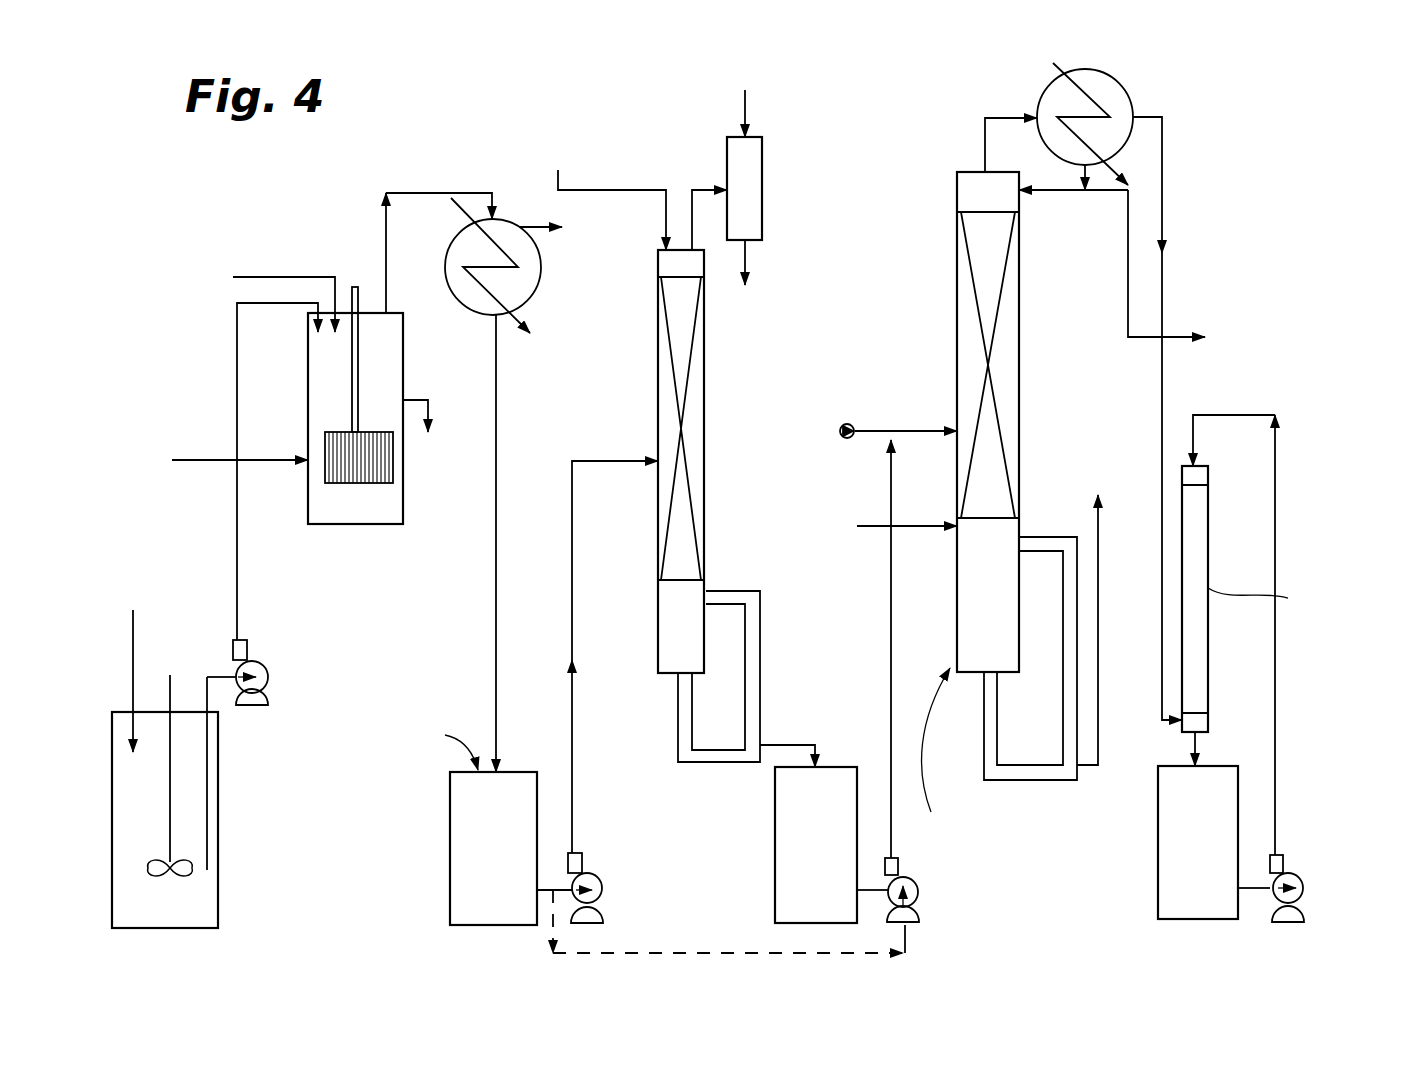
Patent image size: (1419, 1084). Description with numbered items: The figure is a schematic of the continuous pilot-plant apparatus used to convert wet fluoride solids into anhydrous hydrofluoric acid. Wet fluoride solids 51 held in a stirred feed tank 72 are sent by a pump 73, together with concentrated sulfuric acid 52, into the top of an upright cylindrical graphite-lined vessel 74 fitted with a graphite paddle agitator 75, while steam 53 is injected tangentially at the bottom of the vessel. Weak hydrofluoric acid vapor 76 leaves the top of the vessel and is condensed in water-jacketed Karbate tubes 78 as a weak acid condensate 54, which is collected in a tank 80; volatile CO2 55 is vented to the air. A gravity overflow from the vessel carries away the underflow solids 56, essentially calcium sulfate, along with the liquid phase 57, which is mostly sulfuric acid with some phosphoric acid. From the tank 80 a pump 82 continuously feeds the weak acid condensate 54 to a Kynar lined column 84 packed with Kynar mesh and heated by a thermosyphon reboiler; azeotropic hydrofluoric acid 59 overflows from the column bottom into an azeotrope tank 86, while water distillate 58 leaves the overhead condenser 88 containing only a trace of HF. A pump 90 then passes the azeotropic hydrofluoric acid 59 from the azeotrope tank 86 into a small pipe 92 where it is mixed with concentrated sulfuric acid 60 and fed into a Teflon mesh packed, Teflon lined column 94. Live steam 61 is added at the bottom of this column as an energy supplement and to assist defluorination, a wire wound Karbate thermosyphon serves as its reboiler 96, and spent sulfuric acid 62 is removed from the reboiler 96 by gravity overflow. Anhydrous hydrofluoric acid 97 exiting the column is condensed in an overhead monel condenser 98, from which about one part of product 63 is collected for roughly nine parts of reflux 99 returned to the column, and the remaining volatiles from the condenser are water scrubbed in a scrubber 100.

The wet fluoride solids 51 is at (237, 385).
The concentrated sulfuric acid 52 is at (316, 258).
The steam 53 is at (224, 447).
The weak acid condensate 54 is at (497, 405).
The volatile CO2 55 is at (525, 227).
The underflow solids 56 is at (436, 406).
The liquid phase 57 is at (441, 458).
The water distillate 58 is at (750, 258).
The azeotropic hydrofluoric acid 59 is at (826, 724).
The concentrated sulfuric acid 60 is at (858, 404).
The steam 61 is at (898, 530).
The spent sulfuric acid 62 is at (1098, 578).
The product 63 is at (1128, 310).
The stirred feed tank 72 is at (112, 806).
The pump 73 is at (268, 668).
The graphite-lined vessel 74 is at (403, 350).
The graphite paddle agitator 75 is at (335, 470).
The weak hydrofluoric acid vapor 76 is at (386, 243).
The water-jacketed Karbate tubes 78 is at (530, 257).
The tank 80 is at (450, 846).
The pump 82 is at (592, 880).
The Kynar lined column 84 is at (684, 521).
The azeotrope tank 86 is at (752, 630).
The overhead condenser 88 is at (764, 222).
The pump 90 is at (912, 882).
The pipe 92 is at (932, 408).
The Teflon lined column 94 is at (1019, 384).
The reboiler 96 is at (1063, 712).
The anhydrous hydrofluoric acid 97 is at (985, 145).
The overhead monel condenser 98 is at (1050, 92).
The reflux 99 is at (1052, 200).
The scrubber 100 is at (1265, 620).